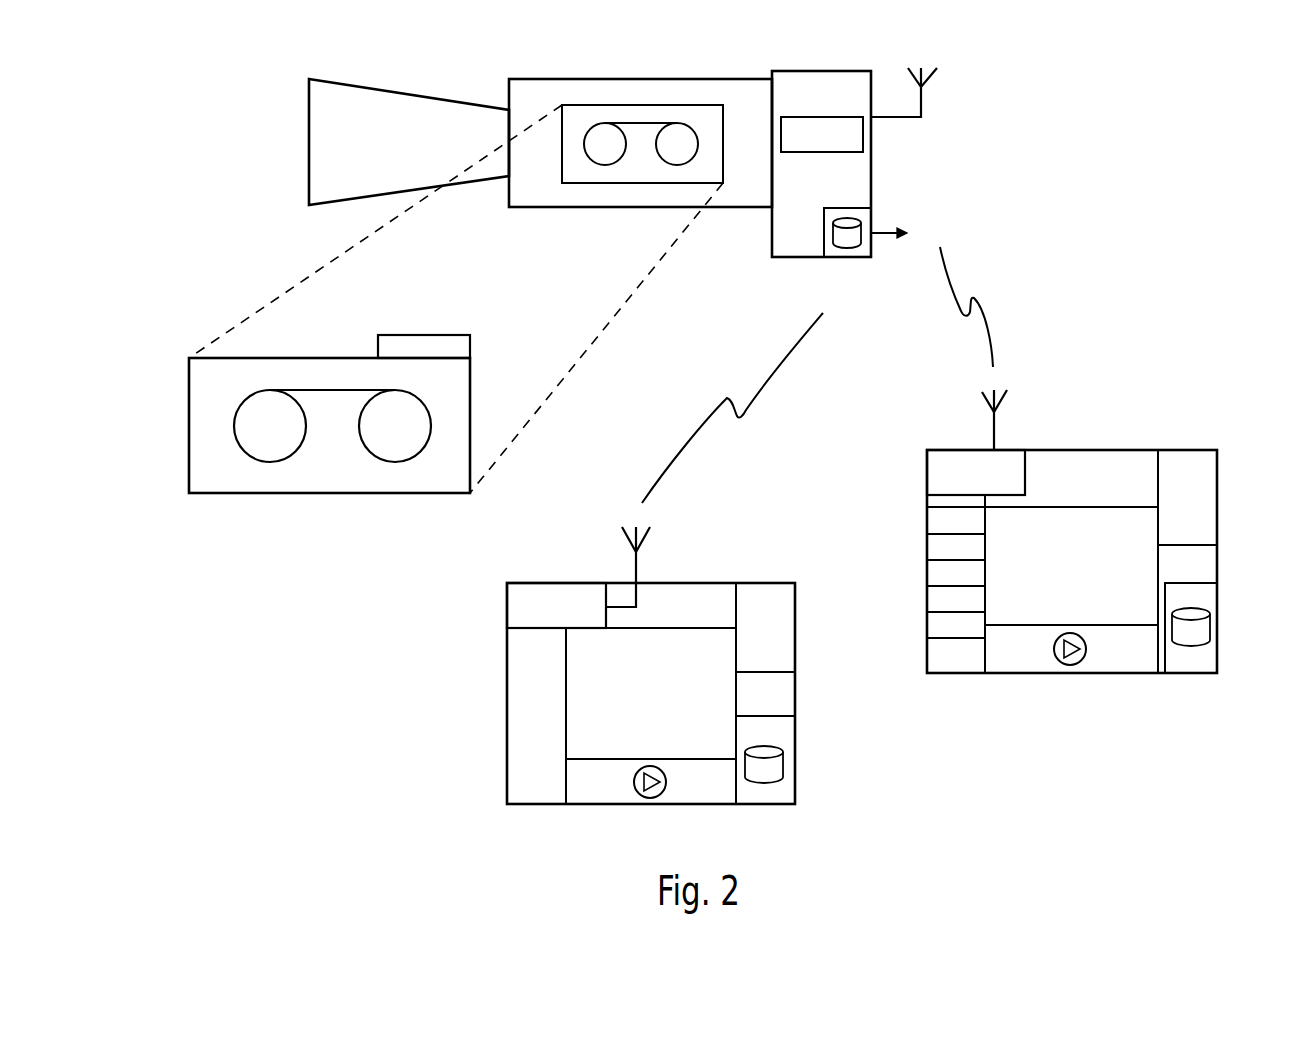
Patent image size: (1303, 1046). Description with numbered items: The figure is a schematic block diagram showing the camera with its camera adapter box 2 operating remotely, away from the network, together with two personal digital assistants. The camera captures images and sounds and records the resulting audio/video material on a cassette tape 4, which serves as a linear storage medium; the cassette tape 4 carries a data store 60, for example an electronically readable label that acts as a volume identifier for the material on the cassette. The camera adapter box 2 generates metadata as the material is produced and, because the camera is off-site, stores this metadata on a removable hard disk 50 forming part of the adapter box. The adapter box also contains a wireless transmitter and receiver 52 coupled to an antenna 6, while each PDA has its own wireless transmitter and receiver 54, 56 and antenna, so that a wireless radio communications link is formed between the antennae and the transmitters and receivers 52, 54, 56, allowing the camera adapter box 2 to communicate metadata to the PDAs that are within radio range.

The camera adapter box 2 is at (823, 71).
The cassette tape 4 is at (398, 493).
The antenna 6 is at (930, 78).
The removable hard disk 50 is at (845, 257).
The wireless transmitter and receiver 52 is at (817, 152).
The wireless transmitter and receiver 54 is at (507, 603).
The wireless transmitter and receiver 56 is at (927, 472).
The data store 60 is at (420, 335).